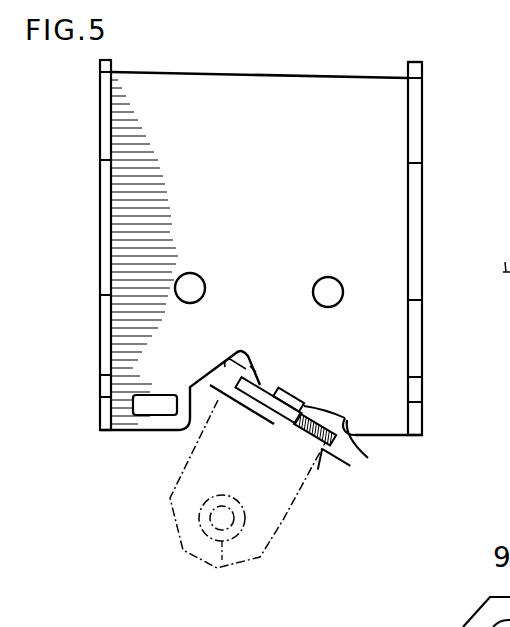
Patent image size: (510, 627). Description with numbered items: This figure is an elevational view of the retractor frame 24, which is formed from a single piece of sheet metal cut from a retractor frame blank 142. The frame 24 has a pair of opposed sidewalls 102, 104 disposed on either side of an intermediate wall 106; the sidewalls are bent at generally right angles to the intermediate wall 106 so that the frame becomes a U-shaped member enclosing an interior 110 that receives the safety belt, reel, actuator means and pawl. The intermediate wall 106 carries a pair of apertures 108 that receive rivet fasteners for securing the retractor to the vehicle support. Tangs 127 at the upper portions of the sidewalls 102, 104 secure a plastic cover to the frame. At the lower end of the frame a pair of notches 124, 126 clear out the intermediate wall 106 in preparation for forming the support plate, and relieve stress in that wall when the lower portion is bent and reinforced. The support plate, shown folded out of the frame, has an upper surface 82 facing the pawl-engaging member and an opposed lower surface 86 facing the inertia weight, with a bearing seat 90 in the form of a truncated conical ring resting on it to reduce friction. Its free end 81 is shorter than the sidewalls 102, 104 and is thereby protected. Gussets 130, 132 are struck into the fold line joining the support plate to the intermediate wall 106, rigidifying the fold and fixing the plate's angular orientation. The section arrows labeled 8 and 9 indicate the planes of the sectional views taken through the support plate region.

The retractor frame 24 is at (333, 35).
The free end of the support plate 81 is at (280, 428).
The upper surface of the support plate 82 is at (300, 392).
The lower surface of the support plate 86 is at (322, 450).
The bearing seat 90 is at (308, 407).
The sidewall 102 is at (422, 228).
The sidewall 104 is at (100, 205).
The intermediate wall 106 is at (188, 98).
The apertures 108 is at (322, 292).
The interior 110 is at (148, 92).
The notch 124 is at (418, 475).
The notch 126 is at (230, 363).
The tangs 127 is at (422, 62).
The gusset 130 is at (343, 417).
The gusset 132 is at (252, 368).
The retractor frame blank 142 is at (243, 73).
The section line 8- 8 is at (213, 393).
The section line 9- 9 is at (307, 372).